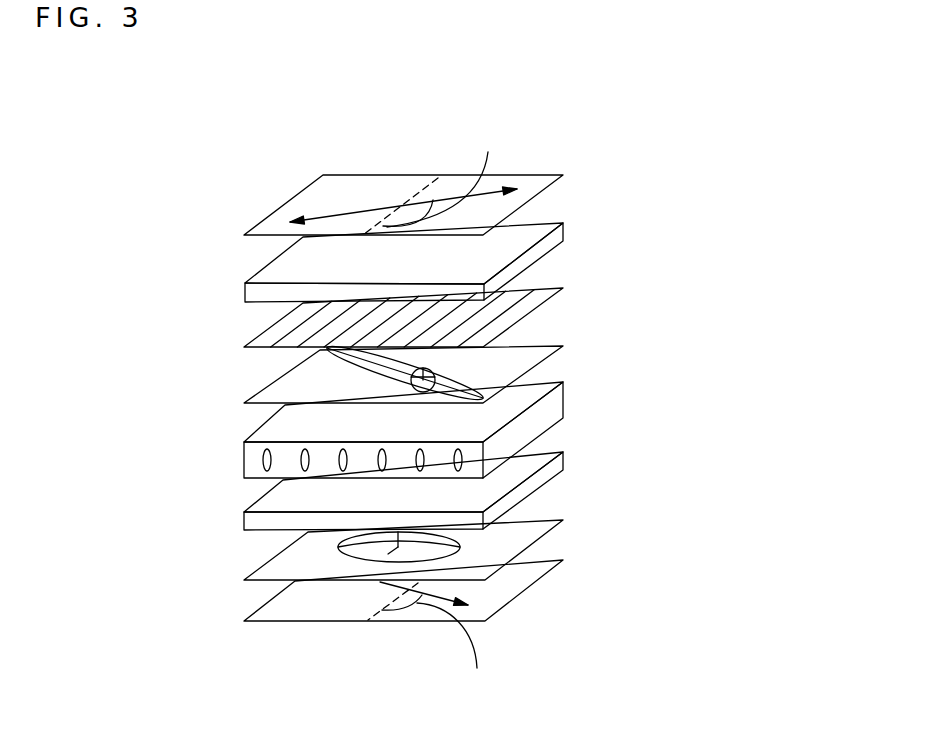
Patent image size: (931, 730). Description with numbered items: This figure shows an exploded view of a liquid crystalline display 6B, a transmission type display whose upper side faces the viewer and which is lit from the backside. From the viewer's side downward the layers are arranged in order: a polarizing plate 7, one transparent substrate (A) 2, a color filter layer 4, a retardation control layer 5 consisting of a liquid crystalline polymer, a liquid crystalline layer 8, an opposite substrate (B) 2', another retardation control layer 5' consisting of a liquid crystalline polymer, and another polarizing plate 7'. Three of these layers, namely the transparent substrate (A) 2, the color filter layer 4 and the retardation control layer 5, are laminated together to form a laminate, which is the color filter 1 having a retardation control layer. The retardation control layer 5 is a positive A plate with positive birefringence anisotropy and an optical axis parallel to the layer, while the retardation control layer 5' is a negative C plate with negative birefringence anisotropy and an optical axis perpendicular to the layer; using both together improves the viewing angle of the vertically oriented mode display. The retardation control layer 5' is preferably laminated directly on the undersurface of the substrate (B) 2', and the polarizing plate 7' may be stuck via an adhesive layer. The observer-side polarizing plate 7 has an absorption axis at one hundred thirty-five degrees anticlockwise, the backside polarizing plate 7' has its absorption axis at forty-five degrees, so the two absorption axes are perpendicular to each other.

The liquid crystalline display 6B is at (207, 239).
The color filter having a retardation control layer 1 is at (660, 240).
The polarizing plate 7 is at (445, 178).
The transparent substrate (A) 2 is at (446, 262).
The color filter layer 4 is at (537, 303).
The retardation control layer 5 is at (445, 372).
The liquid crystalline layer 8 is at (533, 412).
The opposite substrate (B) 2' is at (450, 491).
The retardation control layer 5' is at (450, 546).
The polarizing plate 7' is at (450, 633).